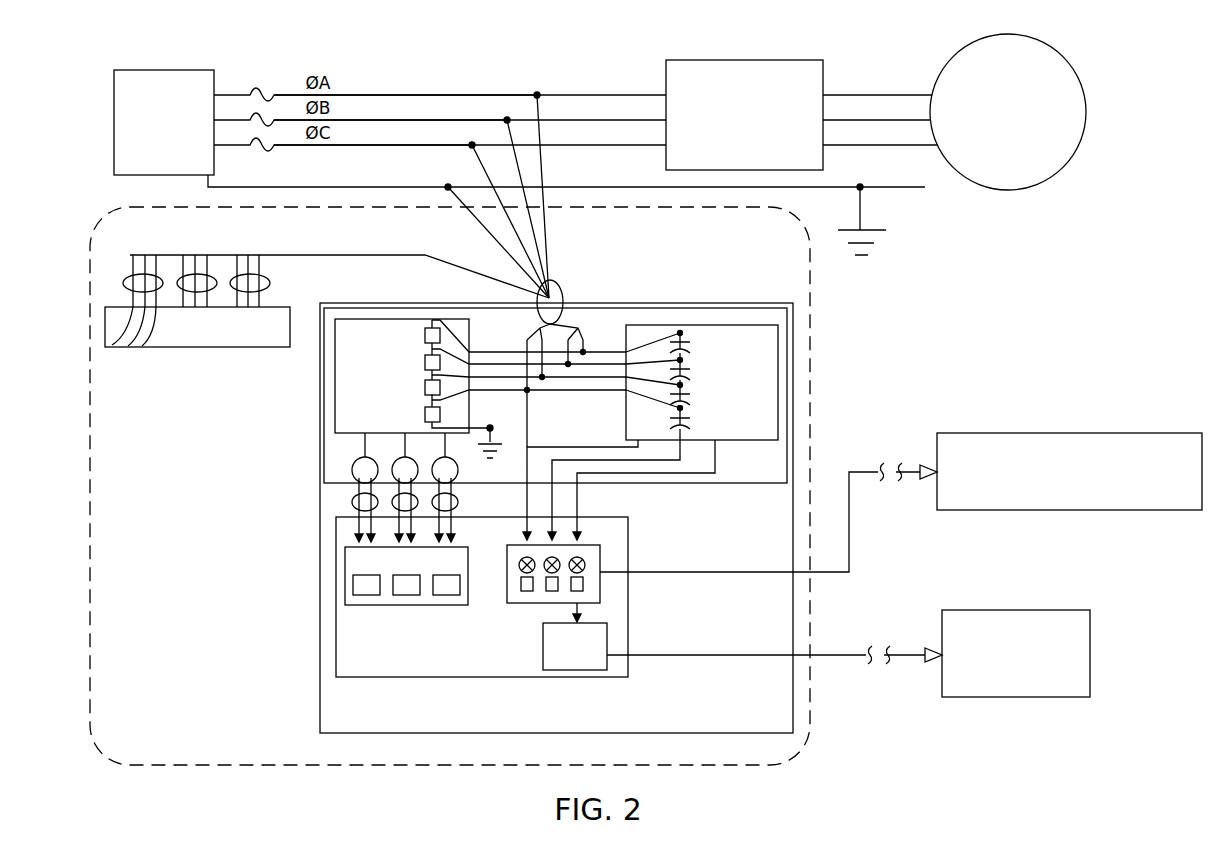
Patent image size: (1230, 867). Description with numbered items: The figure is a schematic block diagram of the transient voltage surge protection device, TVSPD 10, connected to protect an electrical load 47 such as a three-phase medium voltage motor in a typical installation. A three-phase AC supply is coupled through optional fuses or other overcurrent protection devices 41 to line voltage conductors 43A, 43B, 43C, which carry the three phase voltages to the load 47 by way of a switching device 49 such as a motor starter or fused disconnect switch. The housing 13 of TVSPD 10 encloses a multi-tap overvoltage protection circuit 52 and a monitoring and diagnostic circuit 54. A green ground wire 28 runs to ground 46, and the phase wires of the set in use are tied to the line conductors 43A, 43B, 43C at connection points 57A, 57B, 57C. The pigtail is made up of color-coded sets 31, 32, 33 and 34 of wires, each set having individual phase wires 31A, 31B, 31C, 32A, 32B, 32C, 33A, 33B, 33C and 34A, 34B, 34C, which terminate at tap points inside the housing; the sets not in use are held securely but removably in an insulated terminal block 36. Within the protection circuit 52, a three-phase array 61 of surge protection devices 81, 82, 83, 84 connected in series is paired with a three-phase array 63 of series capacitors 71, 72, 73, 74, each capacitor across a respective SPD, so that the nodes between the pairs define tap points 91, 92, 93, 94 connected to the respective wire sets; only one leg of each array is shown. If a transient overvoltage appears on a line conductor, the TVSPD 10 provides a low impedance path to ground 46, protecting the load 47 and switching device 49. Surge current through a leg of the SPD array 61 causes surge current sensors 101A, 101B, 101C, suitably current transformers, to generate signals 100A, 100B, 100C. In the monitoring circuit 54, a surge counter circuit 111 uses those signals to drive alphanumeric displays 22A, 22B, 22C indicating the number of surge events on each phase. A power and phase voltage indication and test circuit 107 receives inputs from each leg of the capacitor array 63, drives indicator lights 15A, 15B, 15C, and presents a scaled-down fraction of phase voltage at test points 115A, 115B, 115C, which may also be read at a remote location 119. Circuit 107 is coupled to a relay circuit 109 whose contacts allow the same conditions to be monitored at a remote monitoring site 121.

The TVSPD 10 is at (812, 350).
The housing 13 is at (320, 547).
The indicator light 15A is at (585, 567).
The indicator light 15B is at (560, 560).
The indicator light 15C is at (518, 560).
The alphanumeric display 22A is at (445, 597).
The alphanumeric display 22B is at (405, 596).
The alphanumeric display 22C is at (367, 596).
The ground wire 28 is at (488, 232).
The set of wires 31 is at (563, 290).
The phase A wire of set 31 31A is at (544, 163).
The phase B wire of set 31 31B is at (523, 177).
The phase C wire of set 31 31C is at (484, 172).
The set of wires 32 is at (133, 275).
The phase A wire of set 32 32A is at (578, 330).
The phase B wire of set 32 32B is at (105, 320).
The phase C wire of set 32 32C is at (105, 345).
The set of wires 33 is at (185, 275).
The phase A wire of set 33 33A is at (527, 338).
The phase B wire of set 33 33B is at (195, 307).
The phase C wire of set 33 33C is at (207, 307).
The set of wires 34 is at (238, 275).
The phase A wire of set 34 34A is at (535, 338).
The phase B wire of set 34 34B is at (248, 307).
The phase C wire of set 34 34C is at (259, 307).
The insulated terminal block 36 is at (153, 165).
The fuses or other overcurrent protection devices 41 is at (266, 76).
The line voltage conductor 43A is at (343, 95).
The line voltage conductor 43B is at (395, 120).
The line voltage conductor 43C is at (395, 145).
The ground 46 is at (880, 238).
The electrical load 47 is at (997, 163).
The switching device 49 is at (733, 125).
The multi-tap overvoltage protection circuit 52 is at (775, 483).
The monitoring and diagnostic circuit 54 is at (480, 677).
The phase A tap 57A is at (542, 93).
The phase B tap 57B is at (507, 118).
The phase C tap 57C is at (472, 143).
The three-phase array of surge protection devices 61 is at (345, 373).
The three-phase array of capacitors 63 is at (749, 373).
The capacitor 71 is at (694, 346).
The capacitor 72 is at (694, 372).
The capacitor 73 is at (694, 396).
The capacitor 74 is at (694, 420).
The surge protection device 81 is at (425, 333).
The surge protection device 82 is at (425, 360).
The surge protection device 83 is at (425, 388).
The surge protection device 84 is at (425, 415).
The tap point 91 is at (583, 354).
The tap point 92 is at (568, 366).
The tap point 93 is at (542, 379).
The tap point 94 is at (527, 392).
The signal 100A is at (456, 495).
The signal 100B is at (392, 506).
The signal 100C is at (352, 505).
The surge current sensor 101A is at (352, 460).
The surge current sensor 101B is at (393, 462).
The surge current sensor 101C is at (432, 462).
The power and phase voltage indication and test circuit 107 is at (600, 555).
The relay circuit 109 is at (561, 655).
The surge counter circuit 111 is at (398, 571).
The test point 115A is at (582, 590).
The test point 115B is at (552, 592).
The test point 115C is at (527, 592).
The remote location 119 is at (1120, 510).
The remote monitoring site 121 is at (1068, 697).